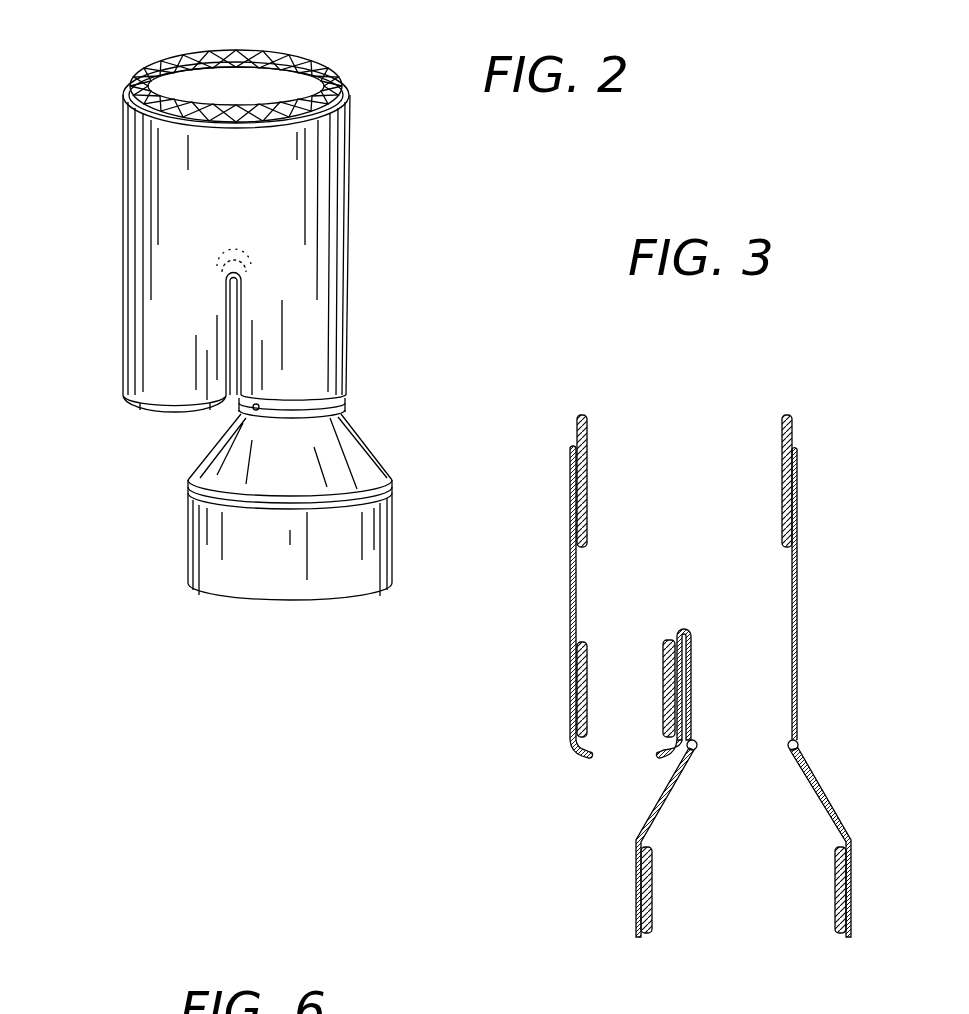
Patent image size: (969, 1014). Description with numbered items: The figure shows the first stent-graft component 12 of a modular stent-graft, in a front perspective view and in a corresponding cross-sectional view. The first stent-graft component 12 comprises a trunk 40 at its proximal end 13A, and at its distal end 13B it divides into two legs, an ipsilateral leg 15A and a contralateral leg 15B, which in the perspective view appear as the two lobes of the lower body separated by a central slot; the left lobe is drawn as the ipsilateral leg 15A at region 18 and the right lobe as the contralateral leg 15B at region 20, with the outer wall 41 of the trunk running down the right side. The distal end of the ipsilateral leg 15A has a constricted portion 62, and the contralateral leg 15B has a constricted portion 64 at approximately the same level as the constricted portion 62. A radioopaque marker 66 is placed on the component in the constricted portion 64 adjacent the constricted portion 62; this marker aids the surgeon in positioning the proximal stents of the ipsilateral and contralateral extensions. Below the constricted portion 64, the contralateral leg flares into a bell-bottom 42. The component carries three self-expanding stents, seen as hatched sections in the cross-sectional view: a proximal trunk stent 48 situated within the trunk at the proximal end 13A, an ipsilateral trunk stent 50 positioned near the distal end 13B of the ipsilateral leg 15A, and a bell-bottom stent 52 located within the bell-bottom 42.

In FIG. 2, the first stent-graft component 12 is at (365, 188).
In FIG. 3, the first stent-graft component 12 is at (832, 506).
In FIG. 3, the proximal end 13A is at (752, 410).
In FIG. 3, the distal end 13B is at (622, 762).
In FIG. 2, the ipsilateral leg 15A is at (155, 308).
In FIG. 3, the ipsilateral leg 15A is at (572, 655).
In FIG. 2, the contralateral leg 15B is at (313, 313).
In FIG. 3, the contralateral leg 15B is at (800, 665).
In FIG. 2, the first compartment 18 is at (160, 350).
In FIG. 3, the first compartment 18 is at (610, 683).
In FIG. 2, the second compartment 20 is at (314, 357).
In FIG. 3, the second compartment 20 is at (800, 705).
In FIG. 2, the trunk 40 is at (138, 150).
In FIG. 3, the trunk 40 is at (571, 540).
In FIG. 2, the side wall 41 is at (338, 143).
In FIG. 3, the side wall 41 is at (800, 590).
In FIG. 2, the bell-bottom 42 is at (210, 543).
In FIG. 3, the bell-bottom 42 is at (852, 895).
In FIG. 2, the proximal trunk stent 48 is at (163, 58).
In FIG. 3, the proximal trunk stent 48 is at (577, 475).
In FIG. 3, the ipsilateral trunk stent 50 is at (577, 705).
In FIG. 3, the bell-bottom stent 52 is at (647, 888).
In FIG. 2, the constricted portion 62 is at (155, 412).
In FIG. 3, the constricted portion 62 is at (582, 758).
In FIG. 2, the constricted portion 64 is at (348, 400).
In FIG. 3, the constricted portion 64 is at (800, 745).
In FIG. 2, the radioopaque marker 66 is at (240, 420).